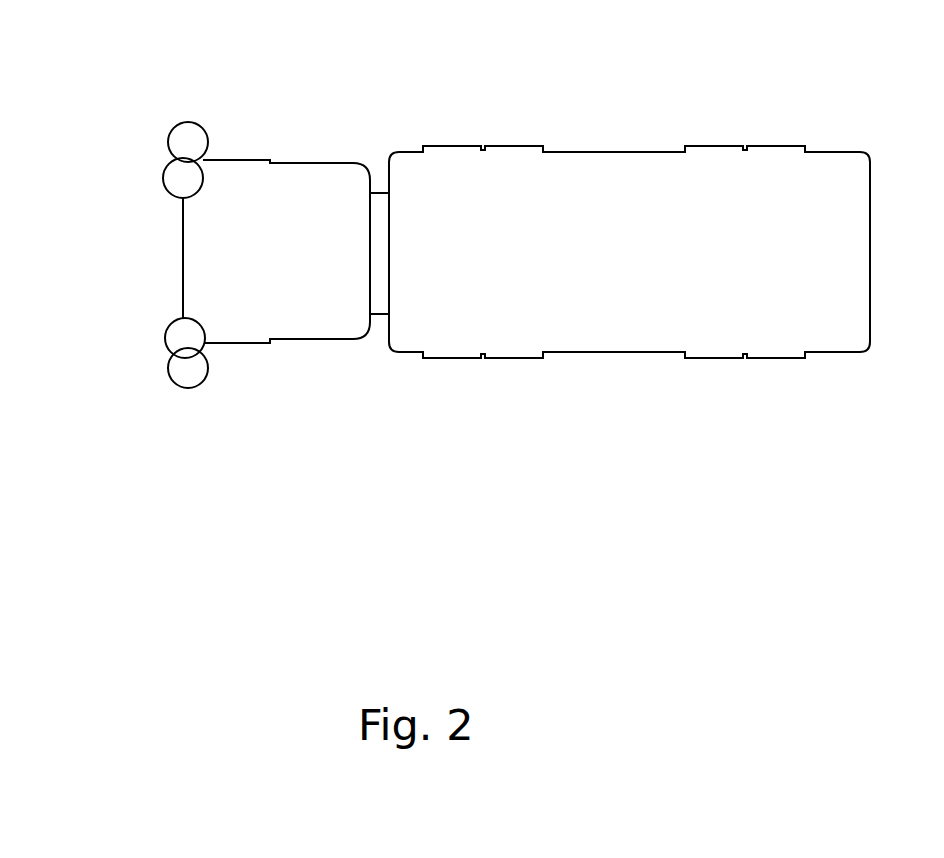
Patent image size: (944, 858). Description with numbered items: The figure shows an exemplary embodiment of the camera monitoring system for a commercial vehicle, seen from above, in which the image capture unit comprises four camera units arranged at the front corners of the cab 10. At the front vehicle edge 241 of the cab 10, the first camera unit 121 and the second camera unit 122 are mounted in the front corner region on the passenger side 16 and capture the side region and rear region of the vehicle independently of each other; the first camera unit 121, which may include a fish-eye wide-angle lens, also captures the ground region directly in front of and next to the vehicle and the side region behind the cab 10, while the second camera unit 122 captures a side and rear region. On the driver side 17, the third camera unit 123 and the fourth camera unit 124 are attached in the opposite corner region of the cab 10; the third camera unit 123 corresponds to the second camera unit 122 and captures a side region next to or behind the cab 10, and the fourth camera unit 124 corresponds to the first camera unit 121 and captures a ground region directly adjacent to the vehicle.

The cab 10 is at (325, 316).
The passenger side 16 is at (300, 160).
The driver side 17 is at (282, 340).
The front vehicle edge 241 is at (183, 266).
The first camera unit 121 is at (165, 170).
The second camera unit 122 is at (184, 122).
The third camera unit 123 is at (168, 372).
The fourth camera unit 124 is at (167, 335).